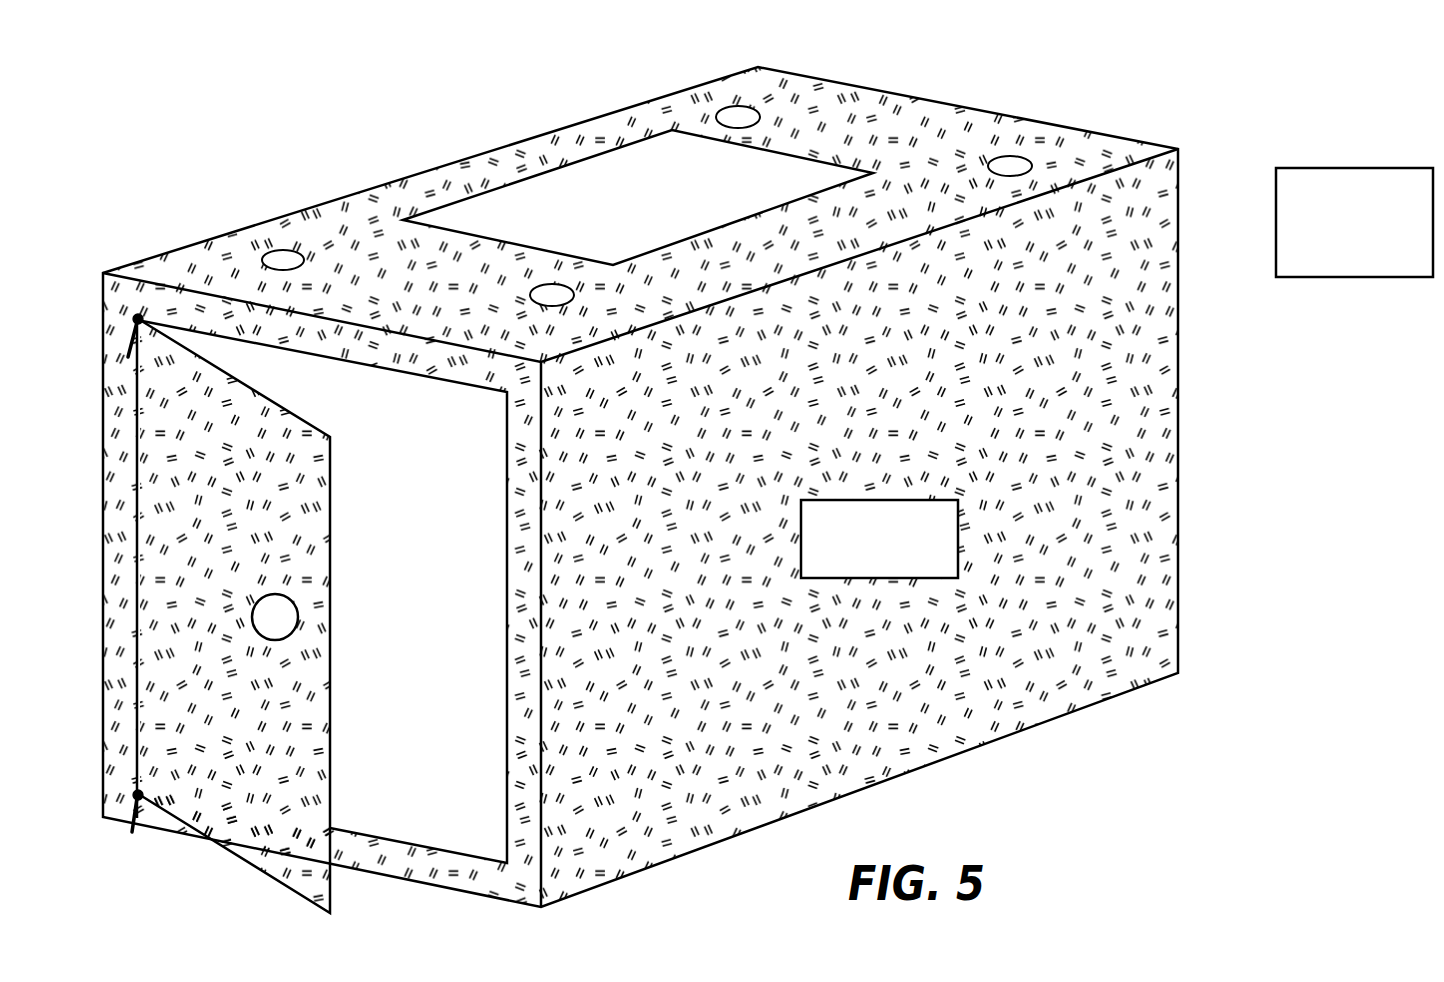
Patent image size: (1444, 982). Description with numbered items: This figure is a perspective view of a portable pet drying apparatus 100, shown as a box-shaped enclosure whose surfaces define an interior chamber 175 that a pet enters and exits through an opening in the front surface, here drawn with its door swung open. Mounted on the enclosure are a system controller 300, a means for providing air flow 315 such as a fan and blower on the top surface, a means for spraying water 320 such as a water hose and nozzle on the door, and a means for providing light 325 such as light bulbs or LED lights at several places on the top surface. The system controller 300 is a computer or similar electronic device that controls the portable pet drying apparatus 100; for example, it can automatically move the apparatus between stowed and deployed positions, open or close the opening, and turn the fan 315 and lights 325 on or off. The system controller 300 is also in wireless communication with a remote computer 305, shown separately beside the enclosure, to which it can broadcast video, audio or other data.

The portable pet drying apparatus 100 is at (121, 111).
The interior chamber 175 is at (440, 820).
The system controller 300 is at (879, 539).
The remote computer 305 is at (1354, 222).
The means for providing air flow 315 is at (540, 190).
The means for spraying water 320 is at (252, 612).
The means for providing light 325 is at (283, 250).